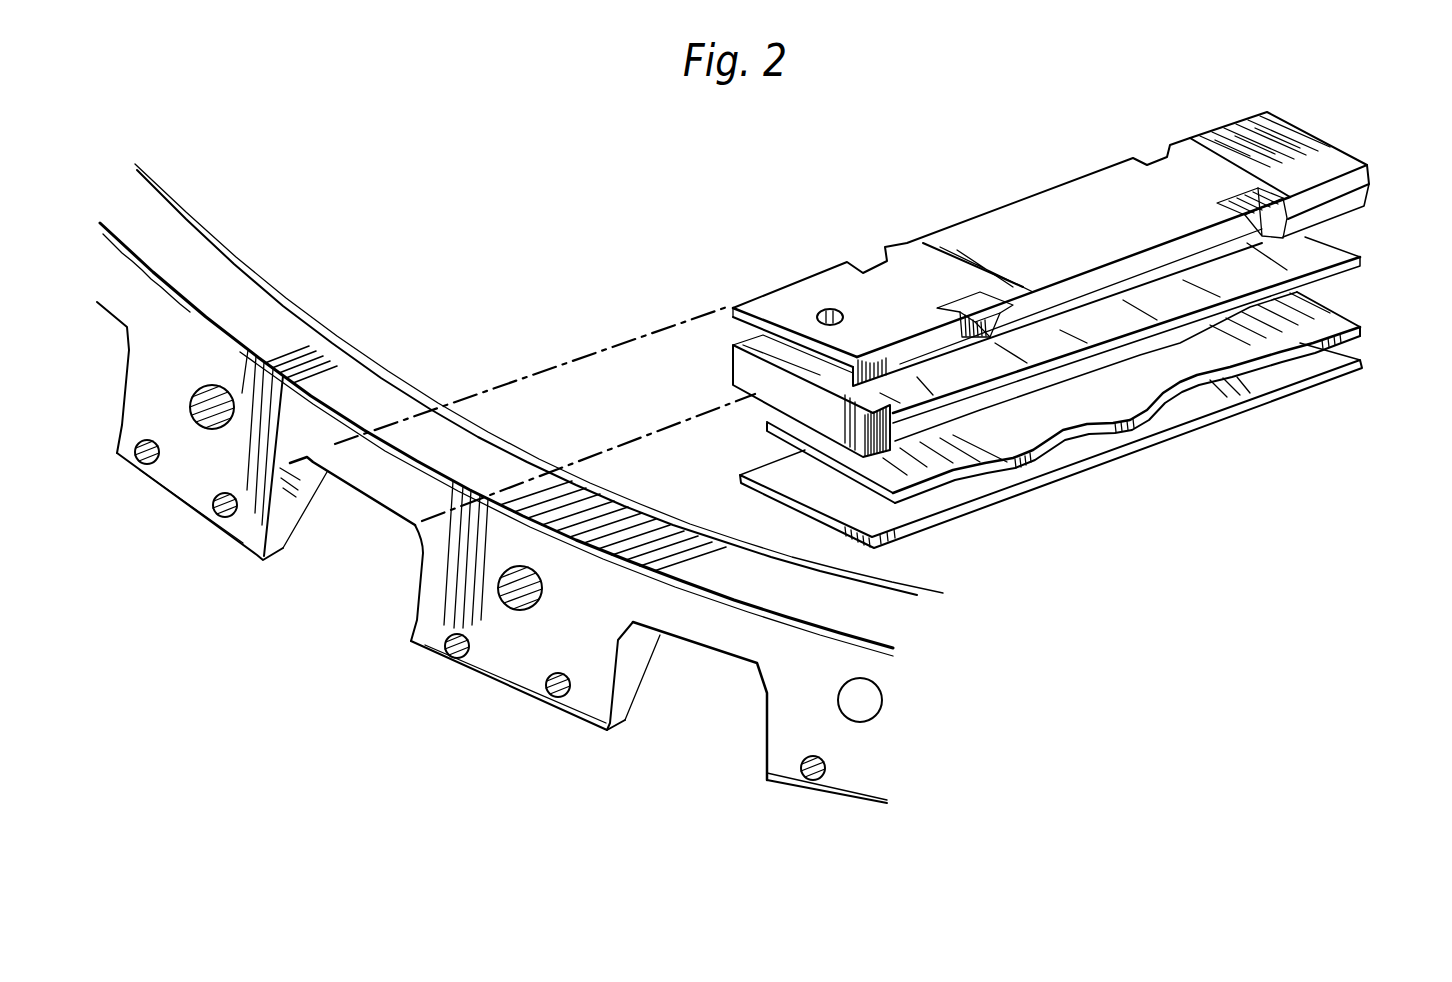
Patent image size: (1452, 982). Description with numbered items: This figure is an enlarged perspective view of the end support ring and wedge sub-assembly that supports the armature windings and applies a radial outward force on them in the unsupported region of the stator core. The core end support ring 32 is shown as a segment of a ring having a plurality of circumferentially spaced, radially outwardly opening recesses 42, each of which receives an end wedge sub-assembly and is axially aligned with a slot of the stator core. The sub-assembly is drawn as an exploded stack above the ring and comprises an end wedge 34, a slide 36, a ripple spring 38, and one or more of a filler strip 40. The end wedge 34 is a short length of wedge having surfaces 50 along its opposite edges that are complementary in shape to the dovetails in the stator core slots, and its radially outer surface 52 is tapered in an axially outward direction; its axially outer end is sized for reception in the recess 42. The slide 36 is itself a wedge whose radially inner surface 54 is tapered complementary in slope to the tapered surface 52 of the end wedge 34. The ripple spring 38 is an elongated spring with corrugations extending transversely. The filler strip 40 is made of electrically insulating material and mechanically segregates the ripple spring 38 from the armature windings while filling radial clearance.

The core end support ring 32 is at (847, 767).
The end wedge 34 is at (1067, 200).
The slide 36 is at (753, 373).
The ripple spring 38 is at (1357, 327).
The filler strip 40 is at (1293, 385).
The recess 42 is at (660, 683).
The surface 50 is at (1363, 178).
The radially outer surface 52 is at (1343, 215).
The radially inner surface 54 is at (1323, 255).